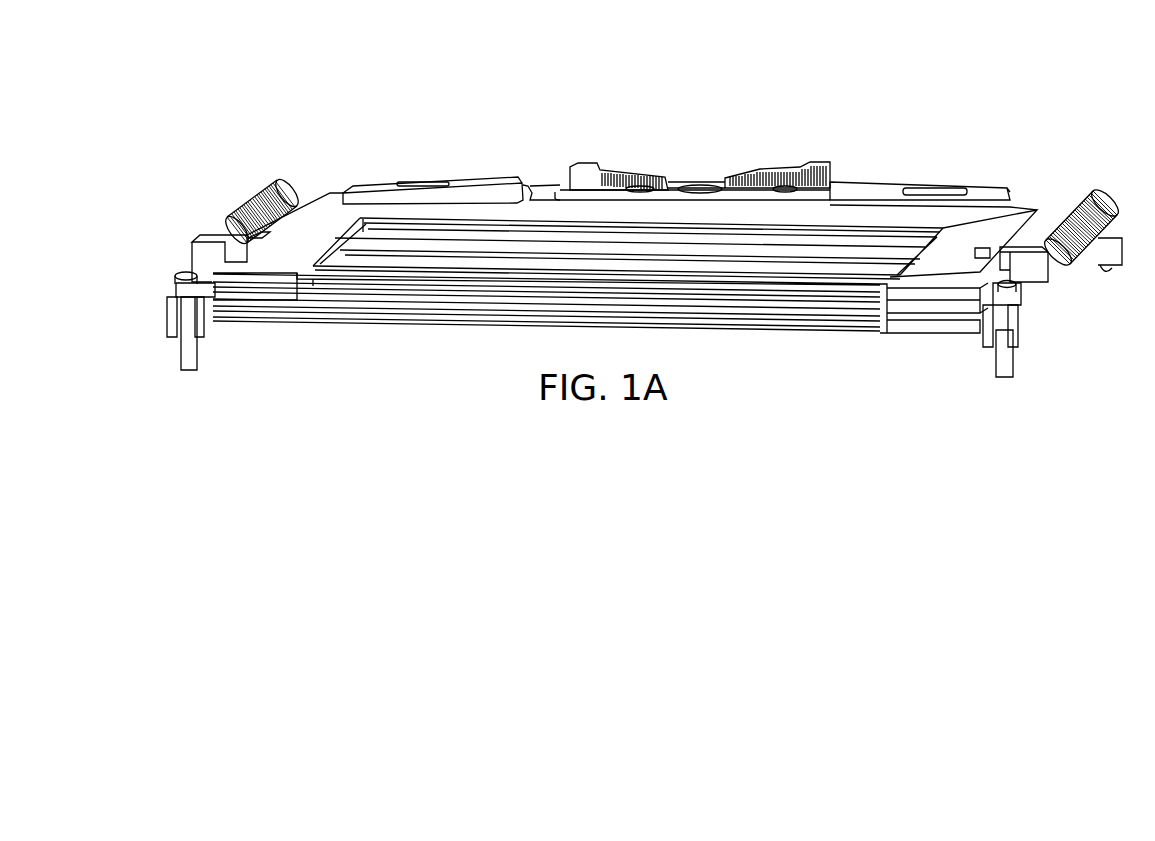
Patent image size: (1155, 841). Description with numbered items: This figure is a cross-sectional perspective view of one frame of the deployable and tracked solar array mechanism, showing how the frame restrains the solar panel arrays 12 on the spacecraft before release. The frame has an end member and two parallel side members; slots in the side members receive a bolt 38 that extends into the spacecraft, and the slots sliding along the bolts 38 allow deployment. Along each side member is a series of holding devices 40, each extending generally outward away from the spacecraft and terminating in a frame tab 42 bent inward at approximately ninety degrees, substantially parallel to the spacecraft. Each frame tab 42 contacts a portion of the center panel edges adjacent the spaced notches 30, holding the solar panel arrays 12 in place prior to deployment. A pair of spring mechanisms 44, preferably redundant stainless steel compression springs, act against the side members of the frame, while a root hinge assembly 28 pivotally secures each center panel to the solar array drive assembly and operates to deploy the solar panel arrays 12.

The solar panel arrays 12 is at (625, 255).
The root hinge assembly 28 is at (706, 150).
The notches 30 is at (268, 250).
The bolt 38 is at (192, 350).
The holding device 40 is at (210, 273).
The frame tab 42 is at (240, 250).
The spring mechanism 44 is at (281, 153).